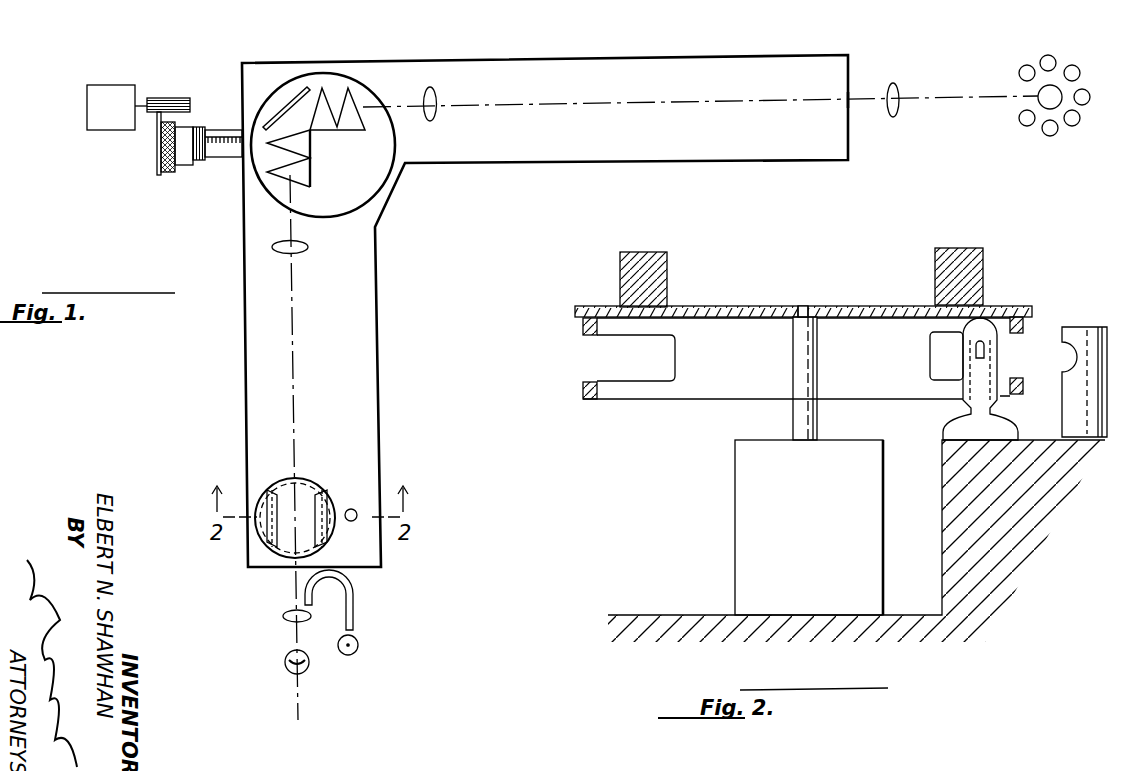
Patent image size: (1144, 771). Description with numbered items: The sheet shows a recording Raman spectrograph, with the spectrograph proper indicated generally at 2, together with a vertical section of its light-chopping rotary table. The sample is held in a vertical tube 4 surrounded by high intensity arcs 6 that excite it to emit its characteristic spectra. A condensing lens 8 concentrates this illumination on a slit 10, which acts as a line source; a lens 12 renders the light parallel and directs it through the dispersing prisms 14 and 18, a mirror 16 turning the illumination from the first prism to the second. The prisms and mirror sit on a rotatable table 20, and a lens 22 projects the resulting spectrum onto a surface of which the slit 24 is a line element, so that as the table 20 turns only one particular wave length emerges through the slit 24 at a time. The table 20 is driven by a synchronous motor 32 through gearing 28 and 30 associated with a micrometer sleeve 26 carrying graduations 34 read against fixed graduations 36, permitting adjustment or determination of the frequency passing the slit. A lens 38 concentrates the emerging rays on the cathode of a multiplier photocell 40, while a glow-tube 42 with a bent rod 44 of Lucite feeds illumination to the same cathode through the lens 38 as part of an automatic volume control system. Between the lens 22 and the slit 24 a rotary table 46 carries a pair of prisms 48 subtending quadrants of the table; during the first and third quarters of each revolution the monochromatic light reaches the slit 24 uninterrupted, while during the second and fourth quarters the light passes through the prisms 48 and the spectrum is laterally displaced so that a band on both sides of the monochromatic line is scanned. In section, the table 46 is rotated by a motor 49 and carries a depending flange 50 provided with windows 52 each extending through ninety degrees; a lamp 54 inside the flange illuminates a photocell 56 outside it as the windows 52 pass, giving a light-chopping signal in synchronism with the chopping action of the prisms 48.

In FIG. 1, the spectrograph 2 is at (602, 162).
In FIG. 1, the vertical tube 4 is at (1063, 87).
In FIG. 1, the high intensity arcs 6 is at (1056, 58).
In FIG. 1, the condensing lens 8 is at (900, 93).
In FIG. 1, the slit 10 is at (848, 100).
In FIG. 1, the lens 12 is at (438, 94).
In FIG. 1, the dispersing prism 14 is at (328, 102).
In FIG. 1, the mirror 16 is at (307, 90).
In FIG. 1, the dispersing prism 18 is at (267, 143).
In FIG. 1, the rotatable table 20 is at (397, 137).
In FIG. 1, the lens 22 is at (305, 252).
In FIG. 1, the slit 24 is at (296, 570).
In FIG. 1, the micrometer sleeve 26 is at (184, 166).
In FIG. 1, the gearing 28 is at (165, 98).
In FIG. 1, the gearing 30 is at (158, 150).
In FIG. 1, the synchronous motor 32 is at (118, 92).
In FIG. 1, the graduations 34 is at (201, 130).
In FIG. 1, the fixed graduations 36 is at (229, 146).
In FIG. 1, the lens 38 is at (287, 623).
In FIG. 1, the photocell 40 is at (308, 660).
In FIG. 1, the glow-tube 42 is at (360, 648).
In FIG. 1, the bent rod 44 is at (357, 595).
In FIG. 1, the rotary table 46 is at (317, 488).
In FIG. 2, the rotary table 46 is at (773, 306).
In FIG. 1, the prisms 48 is at (268, 500).
In FIG. 2, the prisms 48 is at (670, 277).
In FIG. 2, the motor 49 is at (753, 520).
In FIG. 1, the depending flange 50 is at (303, 478).
In FIG. 2, the depending flange 50 is at (713, 383).
In FIG. 2, the windows 52 is at (618, 357).
In FIG. 1, the lamp 54 is at (333, 534).
In FIG. 2, the lamp 54 is at (1000, 353).
In FIG. 1, the photocell 56 is at (357, 513).
In FIG. 2, the photocell 56 is at (1100, 383).